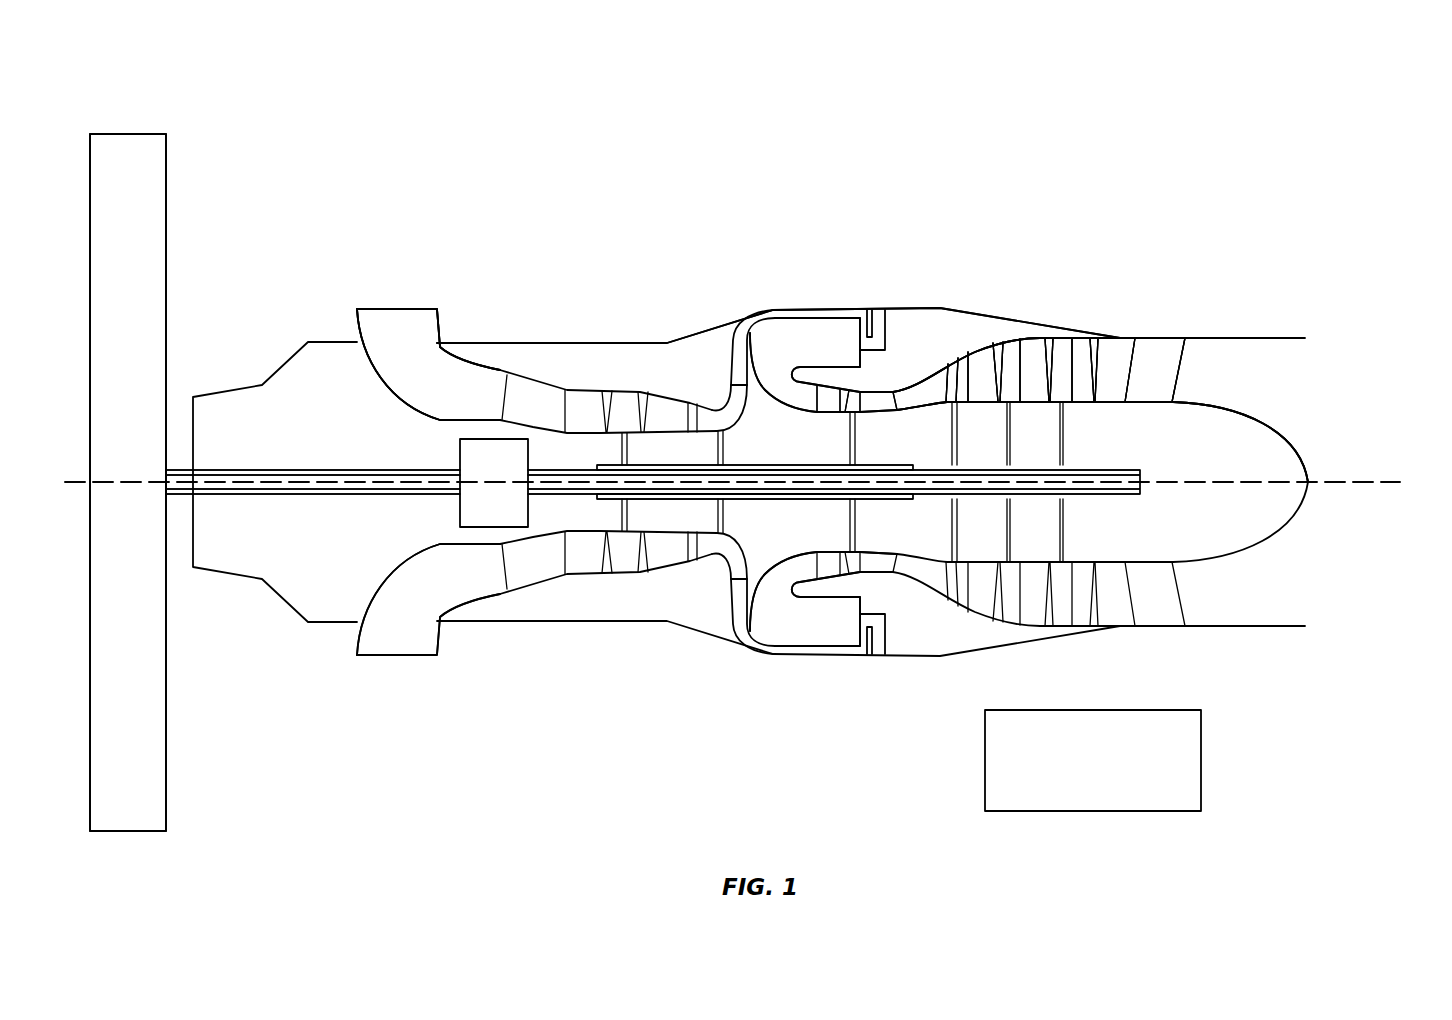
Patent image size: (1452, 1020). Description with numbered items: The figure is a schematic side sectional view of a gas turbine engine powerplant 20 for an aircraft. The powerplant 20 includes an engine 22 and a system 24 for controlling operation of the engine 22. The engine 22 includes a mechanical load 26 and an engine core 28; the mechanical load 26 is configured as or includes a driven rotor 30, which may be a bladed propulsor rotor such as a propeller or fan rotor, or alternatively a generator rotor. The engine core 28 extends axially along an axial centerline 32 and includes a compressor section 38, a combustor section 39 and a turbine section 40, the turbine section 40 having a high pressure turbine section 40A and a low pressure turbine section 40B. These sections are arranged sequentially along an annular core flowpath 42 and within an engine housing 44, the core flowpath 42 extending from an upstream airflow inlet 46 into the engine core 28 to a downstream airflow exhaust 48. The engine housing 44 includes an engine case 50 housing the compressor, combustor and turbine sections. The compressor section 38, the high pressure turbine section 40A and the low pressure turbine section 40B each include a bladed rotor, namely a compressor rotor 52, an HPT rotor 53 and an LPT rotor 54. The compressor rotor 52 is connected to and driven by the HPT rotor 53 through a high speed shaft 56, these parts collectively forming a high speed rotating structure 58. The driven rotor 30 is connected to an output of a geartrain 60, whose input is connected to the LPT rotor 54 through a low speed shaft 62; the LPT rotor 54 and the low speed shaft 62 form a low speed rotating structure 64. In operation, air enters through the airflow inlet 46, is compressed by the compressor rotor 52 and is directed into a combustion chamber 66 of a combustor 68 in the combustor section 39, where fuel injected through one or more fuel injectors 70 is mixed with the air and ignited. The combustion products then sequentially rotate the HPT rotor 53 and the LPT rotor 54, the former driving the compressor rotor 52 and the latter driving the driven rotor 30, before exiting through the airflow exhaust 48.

The gas turbine engine powerplant 20 is at (1222, 114).
The engine 22 is at (481, 154).
The system 24 is at (1201, 757).
The mechanical load 26 is at (139, 114).
The engine core 28 is at (1087, 272).
The driven rotor 30 is at (167, 218).
The axial centerline 32 is at (1397, 486).
The compressor section 38 is at (660, 364).
The combustor section 39 is at (817, 302).
The turbine section 40 is at (1052, 255).
The high pressure turbine section 40A is at (881, 372).
The low pressure turbine section 40B is at (1012, 327).
The core flowpath 42 is at (452, 398).
The engine housing 44 is at (566, 336).
The airflow inlet 46 is at (397, 308).
The airflow exhaust 48 is at (1290, 380).
The engine case 50 is at (607, 340).
The compressor rotor 52 is at (717, 445).
The HPT rotor 53 is at (857, 428).
The LPT rotor 54 is at (957, 422).
The high speed shaft 56 is at (787, 465).
The high speed rotating structure 58 is at (753, 507).
The geartrain 60 is at (458, 455).
The low speed shaft 62 is at (1140, 472).
The low speed rotating structure 64 is at (1118, 500).
The combustion chamber 66 is at (833, 355).
The combustor 68 is at (795, 310).
The fuel injectors 70 is at (866, 310).